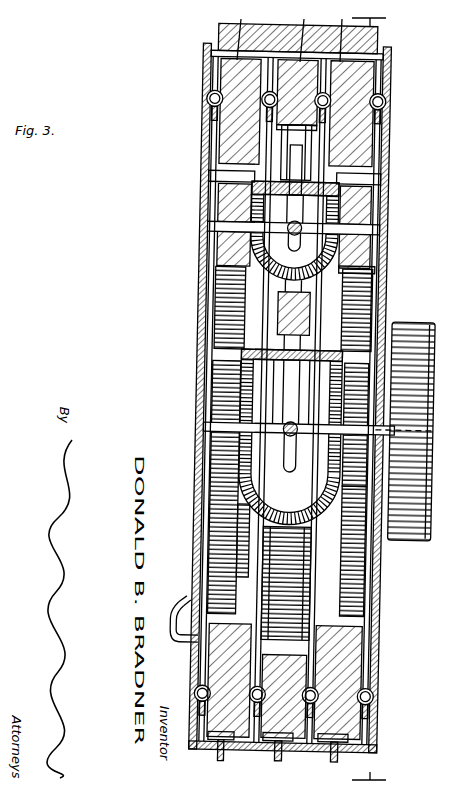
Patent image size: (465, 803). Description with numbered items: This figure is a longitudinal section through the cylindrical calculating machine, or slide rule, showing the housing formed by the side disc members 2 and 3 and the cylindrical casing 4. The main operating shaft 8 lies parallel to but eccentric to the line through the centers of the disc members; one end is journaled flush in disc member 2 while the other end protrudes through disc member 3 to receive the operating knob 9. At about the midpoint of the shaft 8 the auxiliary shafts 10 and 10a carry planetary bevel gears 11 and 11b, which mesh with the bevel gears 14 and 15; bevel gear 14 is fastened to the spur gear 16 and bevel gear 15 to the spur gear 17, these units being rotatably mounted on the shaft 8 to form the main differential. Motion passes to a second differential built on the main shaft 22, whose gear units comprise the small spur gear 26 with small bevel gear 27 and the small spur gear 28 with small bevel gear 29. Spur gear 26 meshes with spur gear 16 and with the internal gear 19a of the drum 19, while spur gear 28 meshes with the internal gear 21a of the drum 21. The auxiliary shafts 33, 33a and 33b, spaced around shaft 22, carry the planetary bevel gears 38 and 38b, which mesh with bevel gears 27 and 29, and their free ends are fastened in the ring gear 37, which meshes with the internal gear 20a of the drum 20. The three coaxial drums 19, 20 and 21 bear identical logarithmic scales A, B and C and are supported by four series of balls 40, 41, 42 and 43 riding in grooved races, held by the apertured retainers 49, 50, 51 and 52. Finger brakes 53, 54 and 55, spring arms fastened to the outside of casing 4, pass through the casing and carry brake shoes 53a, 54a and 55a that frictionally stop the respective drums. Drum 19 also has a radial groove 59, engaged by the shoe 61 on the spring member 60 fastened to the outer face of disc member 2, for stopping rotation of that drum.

The side disc member 2 is at (206, 727).
The side disc member 3 is at (388, 200).
The cylindrical casing 4 is at (250, 752).
The main operating shaft 8 is at (205, 427).
The operating knob 9 is at (430, 360).
The auxiliary shaft 10 is at (296, 432).
The auxiliary shaft 10a is at (290, 437).
The planetary bevel gear 11 is at (376, 336).
The planetary bevel gear 11b is at (280, 418).
The bevel gear 14 is at (243, 373).
The bevel gear 15 is at (393, 372).
The spur gear 16 is at (212, 353).
The spur gear 17 is at (352, 576).
The drum 19 is at (222, 80).
The internal gear 19a is at (215, 175).
The drum 20 is at (236, 128).
The internal gear 20a is at (335, 126).
The drum 21 is at (365, 80).
The internal gear 21a is at (365, 177).
The main shaft of second differential 22 is at (205, 247).
The small spur gear 26 is at (222, 258).
The small bevel gear 27 is at (210, 282).
The small spur gear 28 is at (373, 210).
The small bevel gear 29 is at (380, 249).
The auxiliary shaft 33 is at (320, 142).
The auxiliary shaft 33a is at (380, 228).
The auxiliary shaft 33b is at (294, 231).
The ring gear 37 is at (360, 300).
The planetary bevel gear 38 is at (300, 162).
The planetary bevel gear 38b is at (373, 268).
The series of balls 40 is at (201, 100).
The series of balls 41 is at (213, 57).
The series of balls 42 is at (378, 46).
The series of balls 43 is at (388, 100).
The retainer 49 is at (212, 114).
The retainer 50 is at (270, 92).
The retainer 51 is at (328, 94).
The retainer 52 is at (388, 95).
The finger brake 53 is at (226, 762).
The brake shoe 53a is at (210, 722).
The finger brake 54 is at (290, 752).
The brake shoe 54a is at (300, 745).
The finger brake 55 is at (348, 753).
The brake shoe 55a is at (362, 743).
The radially-extending groove 59 is at (197, 648).
The spring member 60 is at (178, 630).
The engaging shoe 61 is at (186, 605).
The logarithmic scale A is at (240, 32).
The logarithmic scale B is at (304, 33).
The logarithmic scale C is at (339, 33).